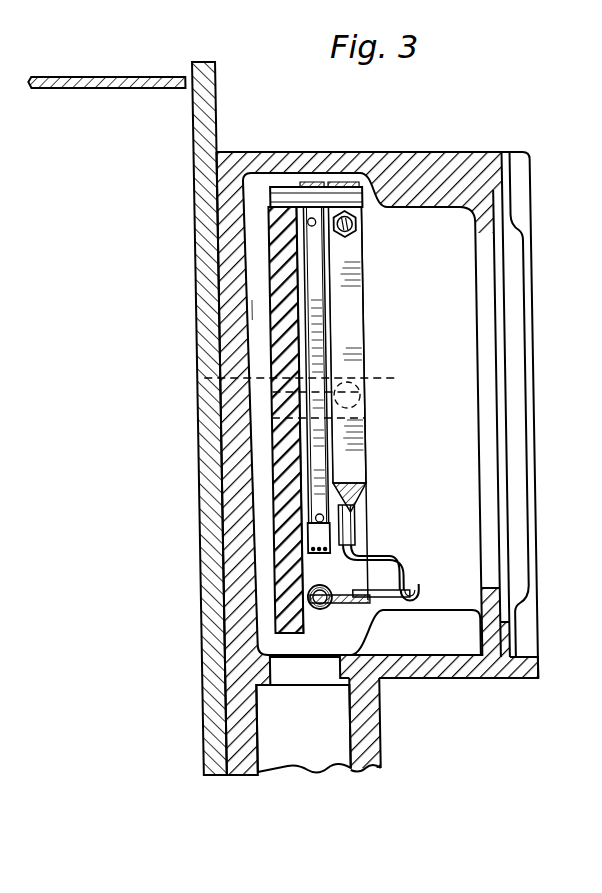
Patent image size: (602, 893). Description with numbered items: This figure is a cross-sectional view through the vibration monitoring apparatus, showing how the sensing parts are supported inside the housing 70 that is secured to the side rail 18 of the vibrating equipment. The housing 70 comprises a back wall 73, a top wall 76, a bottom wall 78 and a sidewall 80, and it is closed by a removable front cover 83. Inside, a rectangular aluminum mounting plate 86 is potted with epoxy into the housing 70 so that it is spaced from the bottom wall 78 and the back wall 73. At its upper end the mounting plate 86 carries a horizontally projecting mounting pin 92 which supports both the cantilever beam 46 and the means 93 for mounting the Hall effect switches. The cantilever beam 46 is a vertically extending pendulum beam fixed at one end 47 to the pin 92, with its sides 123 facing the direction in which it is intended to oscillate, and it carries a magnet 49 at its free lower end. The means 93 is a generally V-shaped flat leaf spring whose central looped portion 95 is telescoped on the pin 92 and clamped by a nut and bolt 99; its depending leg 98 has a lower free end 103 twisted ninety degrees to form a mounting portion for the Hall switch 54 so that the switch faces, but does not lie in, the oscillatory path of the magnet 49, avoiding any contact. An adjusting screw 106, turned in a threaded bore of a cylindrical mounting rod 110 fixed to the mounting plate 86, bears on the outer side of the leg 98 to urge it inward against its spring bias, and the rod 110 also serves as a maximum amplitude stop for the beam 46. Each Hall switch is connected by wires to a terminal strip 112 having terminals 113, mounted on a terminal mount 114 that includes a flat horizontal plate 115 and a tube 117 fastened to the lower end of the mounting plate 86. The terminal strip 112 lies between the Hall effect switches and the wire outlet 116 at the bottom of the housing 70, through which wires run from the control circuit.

The side rail 18 is at (202, 190).
The cantilever beam 46 is at (313, 303).
The one end 47 is at (309, 183).
The magnet 49 is at (321, 540).
The Hall switch 54 is at (343, 520).
The housing 70 is at (419, 145).
The back wall 73 is at (300, 392).
The top wall 76 is at (368, 152).
The bottom wall 78 is at (436, 680).
The sidewall 80 is at (427, 414).
The front cover 83 is at (510, 172).
The mounting plate 86 is at (295, 295).
The mounting pin 92 is at (279, 197).
The means for mounting the Hall effect switches 93 is at (368, 278).
The central looped portion 95 is at (340, 183).
The leg 98 is at (352, 463).
The nut and bolt 99 is at (352, 230).
The lower free end 103 is at (353, 500).
The adjusting screw 106 is at (369, 380).
The mounting rod 110 is at (198, 375).
The terminal strip 112 is at (370, 592).
The terminals 113 is at (405, 583).
The terminal mount 114 is at (311, 622).
The flat horizontal plate 115 is at (323, 608).
The wire outlet 116 is at (333, 742).
The tube 117 is at (318, 590).
The sides 123 is at (315, 333).